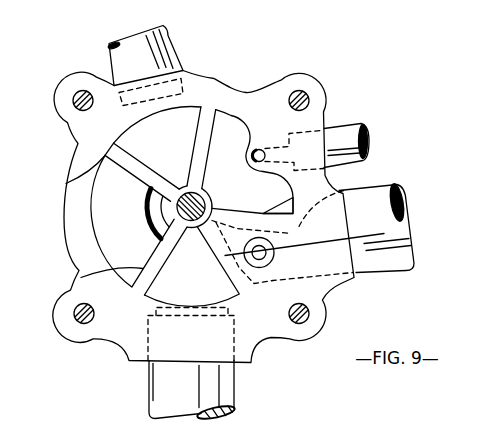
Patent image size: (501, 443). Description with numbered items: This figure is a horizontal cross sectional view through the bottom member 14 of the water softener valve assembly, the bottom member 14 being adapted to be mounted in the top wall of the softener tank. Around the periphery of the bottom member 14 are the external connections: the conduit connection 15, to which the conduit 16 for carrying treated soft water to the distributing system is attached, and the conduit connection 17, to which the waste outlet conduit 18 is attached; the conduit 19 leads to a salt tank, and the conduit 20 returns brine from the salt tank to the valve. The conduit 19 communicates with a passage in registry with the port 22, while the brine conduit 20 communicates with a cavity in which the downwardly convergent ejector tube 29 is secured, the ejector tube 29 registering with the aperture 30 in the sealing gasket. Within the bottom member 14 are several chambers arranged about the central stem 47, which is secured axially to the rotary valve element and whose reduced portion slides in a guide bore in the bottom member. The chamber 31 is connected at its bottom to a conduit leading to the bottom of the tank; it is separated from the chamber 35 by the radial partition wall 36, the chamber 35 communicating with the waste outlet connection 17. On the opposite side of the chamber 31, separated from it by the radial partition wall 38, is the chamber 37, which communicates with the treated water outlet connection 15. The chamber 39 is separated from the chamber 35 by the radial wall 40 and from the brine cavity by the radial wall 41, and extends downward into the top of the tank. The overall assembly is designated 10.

The valve assembly 10 is at (230, 254).
The bottom member 14 is at (72, 254).
The conduit connection 15 is at (251, 363).
The conduit 16 is at (236, 417).
The conduit connection 17 is at (181, 67).
The waste outlet conduit 18 is at (163, 32).
The conduit 19 is at (363, 124).
The conduit 20 is at (400, 237).
The port 22 is at (261, 150).
The ejector tube 29 is at (273, 252).
The aperture 30 is at (16, 439).
The chamber 31 is at (132, 221).
The chamber 35 is at (153, 154).
The radial partition wall 36 is at (65, 183).
The chamber 37 is at (192, 267).
The radial partition wall 38 is at (80, 277).
The chamber 39 is at (245, 168).
The radial wall 40 is at (218, 115).
The radial wall 41 is at (292, 197).
The stem 47 is at (191, 192).